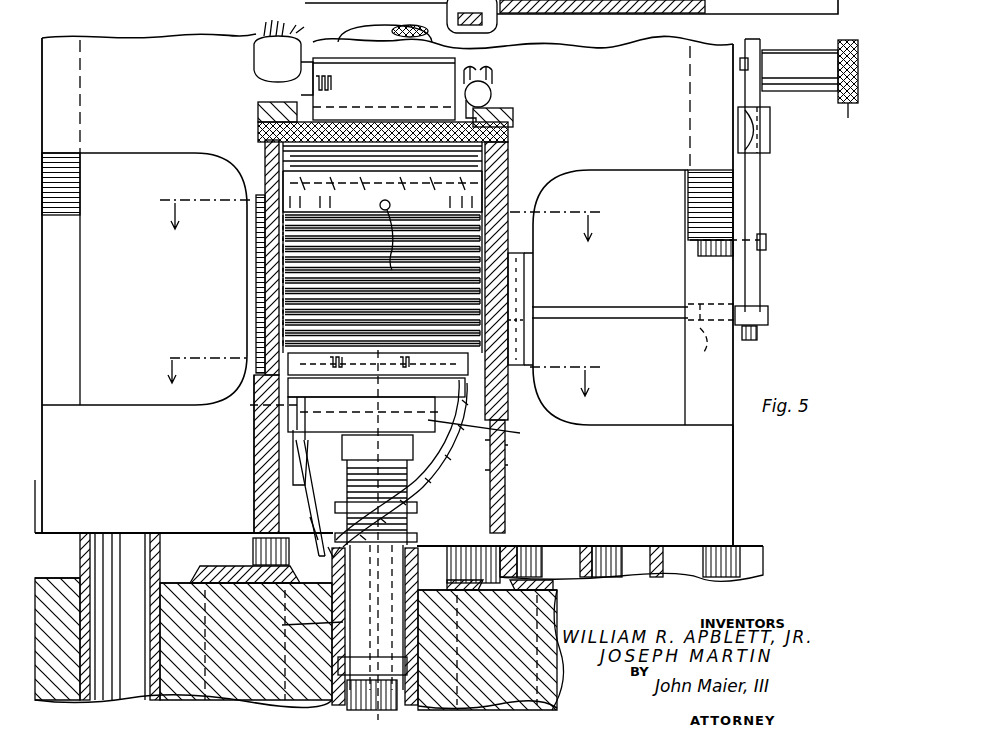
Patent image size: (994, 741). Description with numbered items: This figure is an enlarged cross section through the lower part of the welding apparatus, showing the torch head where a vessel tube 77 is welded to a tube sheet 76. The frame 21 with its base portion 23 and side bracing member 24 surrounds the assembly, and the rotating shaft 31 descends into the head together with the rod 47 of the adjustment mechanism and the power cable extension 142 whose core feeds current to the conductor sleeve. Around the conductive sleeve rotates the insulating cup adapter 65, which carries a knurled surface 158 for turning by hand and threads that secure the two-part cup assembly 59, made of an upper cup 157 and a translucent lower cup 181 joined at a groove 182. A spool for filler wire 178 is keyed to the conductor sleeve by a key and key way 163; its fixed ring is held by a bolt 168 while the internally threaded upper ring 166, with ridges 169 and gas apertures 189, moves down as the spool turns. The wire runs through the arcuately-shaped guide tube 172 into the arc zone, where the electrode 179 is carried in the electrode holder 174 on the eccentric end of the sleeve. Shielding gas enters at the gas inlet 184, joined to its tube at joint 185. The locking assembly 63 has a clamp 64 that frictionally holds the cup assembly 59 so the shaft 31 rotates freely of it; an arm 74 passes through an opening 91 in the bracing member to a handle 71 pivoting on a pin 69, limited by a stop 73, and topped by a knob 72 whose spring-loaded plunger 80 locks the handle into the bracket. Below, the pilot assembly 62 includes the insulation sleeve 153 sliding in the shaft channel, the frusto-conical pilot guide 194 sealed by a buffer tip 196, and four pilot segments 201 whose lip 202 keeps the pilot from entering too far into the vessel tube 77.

The frame 21 is at (754, 433).
The base portion 23 is at (736, 541).
The side bracing member 24 is at (68, 280).
The rotating shaft 31 is at (364, 36).
The rod 47 is at (336, 83).
The cup assembly 59 is at (253, 164).
The pilot assembly 62 is at (376, 490).
The locking assembly 63 is at (537, 297).
The clamp 64 is at (526, 338).
The cup adapter 65 is at (258, 127).
The pin 69 is at (767, 249).
The handle 71 is at (500, 22).
The knob 72 is at (797, 50).
The stop 73 is at (771, 140).
The arm 74 is at (769, 320).
The tube sheet 76 is at (58, 562).
The vessel tube 77 is at (130, 550).
The spring-loaded plunger 80 is at (733, 84).
The opening 91 is at (692, 340).
The power cable extension 142 is at (253, 40).
The insulation sleeve 153 is at (330, 452).
The upper cup 157 is at (526, 270).
The knurled surface 158 is at (512, 130).
The key and key way 163 is at (372, 272).
The upper ring 166 is at (506, 198).
The bolt 168 is at (398, 384).
The ridges 169 is at (376, 255).
The guide tube 172 is at (430, 487).
The electrode holder 174 is at (288, 408).
The filler wire 178 is at (278, 337).
The electrode 179 is at (310, 517).
The lower cup 181 is at (254, 490).
The groove 182 is at (292, 452).
The gas inlet 184 is at (492, 101).
The joint 185 is at (496, 88).
The apertures 189 is at (280, 207).
The pilot guide 194 is at (405, 610).
The buffer tip 196 is at (345, 712).
The pilot segments 201 is at (445, 640).
The lip 202 is at (420, 542).